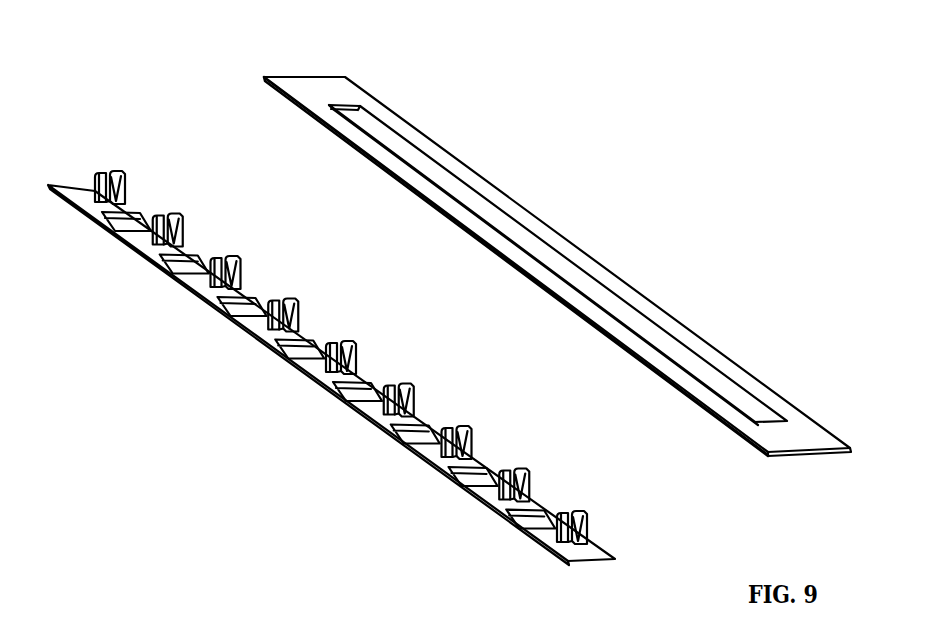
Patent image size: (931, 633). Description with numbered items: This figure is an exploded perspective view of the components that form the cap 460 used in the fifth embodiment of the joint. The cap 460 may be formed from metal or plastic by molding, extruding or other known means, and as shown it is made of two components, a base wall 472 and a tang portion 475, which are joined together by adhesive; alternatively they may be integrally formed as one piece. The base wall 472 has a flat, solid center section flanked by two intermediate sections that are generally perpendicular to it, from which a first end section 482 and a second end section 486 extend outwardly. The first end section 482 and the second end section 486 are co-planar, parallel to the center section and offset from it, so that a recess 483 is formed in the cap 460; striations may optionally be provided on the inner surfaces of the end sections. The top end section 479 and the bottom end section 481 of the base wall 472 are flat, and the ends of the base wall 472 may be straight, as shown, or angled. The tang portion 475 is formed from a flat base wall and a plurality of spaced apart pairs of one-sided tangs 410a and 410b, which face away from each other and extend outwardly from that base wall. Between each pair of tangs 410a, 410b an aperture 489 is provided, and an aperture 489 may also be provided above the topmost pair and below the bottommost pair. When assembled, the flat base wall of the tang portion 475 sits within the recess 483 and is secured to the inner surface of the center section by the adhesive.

The cap 460 is at (867, 467).
The tang portion 475 is at (128, 252).
The one-sided tang 410a is at (247, 268).
The one-sided tang 410b is at (220, 277).
The aperture 489 is at (190, 267).
The first end section 482 is at (653, 315).
The base wall 472 is at (525, 277).
The second end section 486 is at (612, 338).
The bottom end section 481 is at (802, 442).
The recess 483 is at (517, 237).
The top end section 479 is at (330, 97).